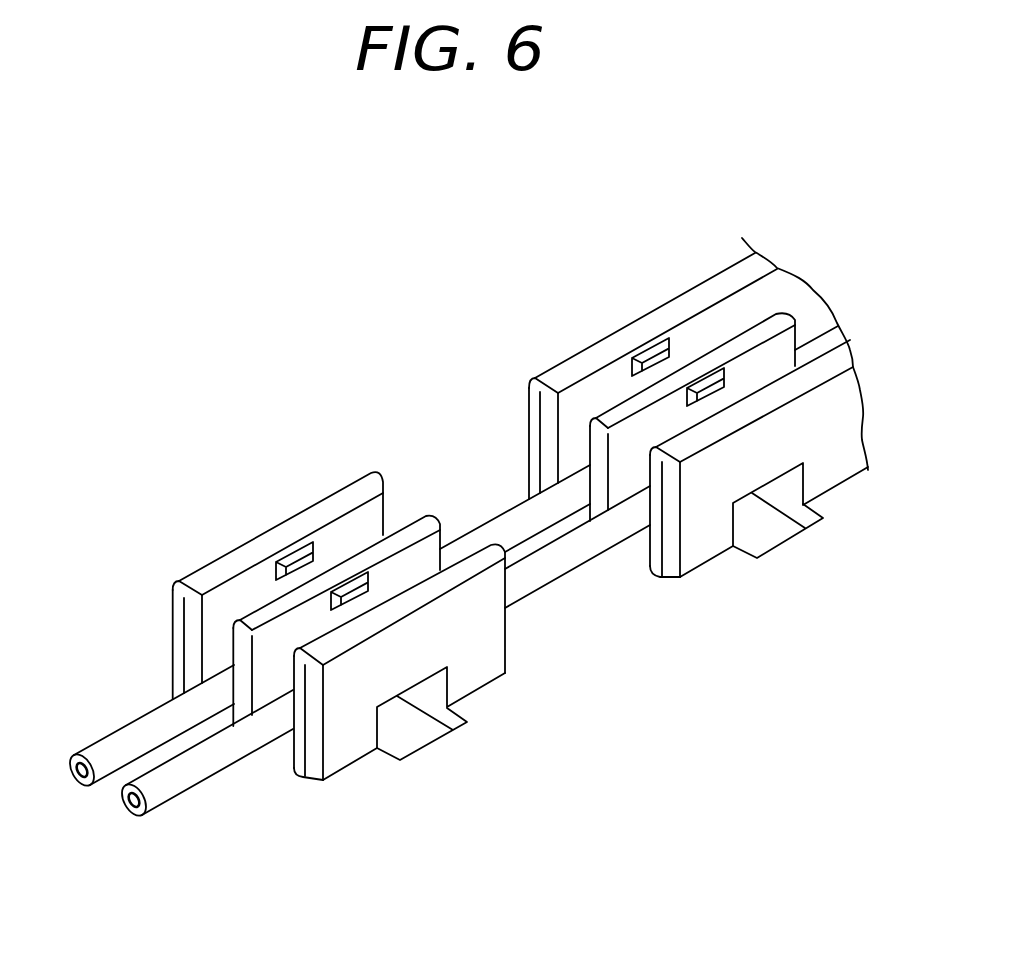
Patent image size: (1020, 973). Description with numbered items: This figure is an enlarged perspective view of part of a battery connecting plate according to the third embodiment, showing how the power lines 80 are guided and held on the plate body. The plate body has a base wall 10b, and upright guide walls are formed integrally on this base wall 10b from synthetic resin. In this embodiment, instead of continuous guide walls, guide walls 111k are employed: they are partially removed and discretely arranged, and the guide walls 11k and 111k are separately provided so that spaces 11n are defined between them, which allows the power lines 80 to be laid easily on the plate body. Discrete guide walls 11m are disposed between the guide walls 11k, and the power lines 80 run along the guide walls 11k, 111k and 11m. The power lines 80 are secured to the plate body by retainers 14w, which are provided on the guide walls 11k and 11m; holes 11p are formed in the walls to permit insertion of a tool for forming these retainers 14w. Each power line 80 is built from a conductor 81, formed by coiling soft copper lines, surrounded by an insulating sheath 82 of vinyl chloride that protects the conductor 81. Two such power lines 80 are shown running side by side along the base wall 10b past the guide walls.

The base wall 10b is at (702, 600).
The continuous guide wall 11k is at (850, 342).
The discrete guide wall 11m is at (432, 518).
The space 11n is at (575, 584).
The hole 11p is at (408, 733).
The retainer 14w is at (355, 585).
The guide wall 111k is at (195, 577).
The power line 80 is at (436, 622).
The conductor 81 is at (123, 804).
The insulating sheath 82 is at (170, 793).